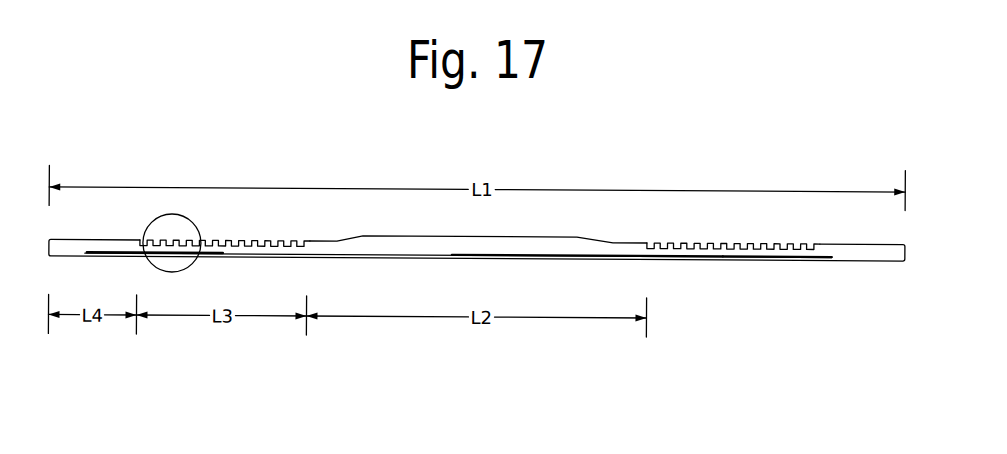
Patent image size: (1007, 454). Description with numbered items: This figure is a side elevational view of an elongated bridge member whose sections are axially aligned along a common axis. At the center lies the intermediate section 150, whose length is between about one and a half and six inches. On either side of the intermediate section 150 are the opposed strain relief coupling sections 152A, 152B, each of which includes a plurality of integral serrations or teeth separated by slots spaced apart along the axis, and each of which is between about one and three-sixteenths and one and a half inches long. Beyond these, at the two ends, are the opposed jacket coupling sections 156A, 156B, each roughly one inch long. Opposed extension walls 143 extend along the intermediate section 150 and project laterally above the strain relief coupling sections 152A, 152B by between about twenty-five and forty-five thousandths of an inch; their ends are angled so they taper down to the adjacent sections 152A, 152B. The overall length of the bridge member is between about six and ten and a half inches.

The extension walls 143 is at (527, 247).
The intermediate section 150 is at (452, 247).
The strain relief coupling section 152A is at (785, 251).
The strain relief coupling section 152B is at (235, 252).
The jacket coupling section 156A is at (838, 246).
The jacket coupling section 156B is at (92, 250).